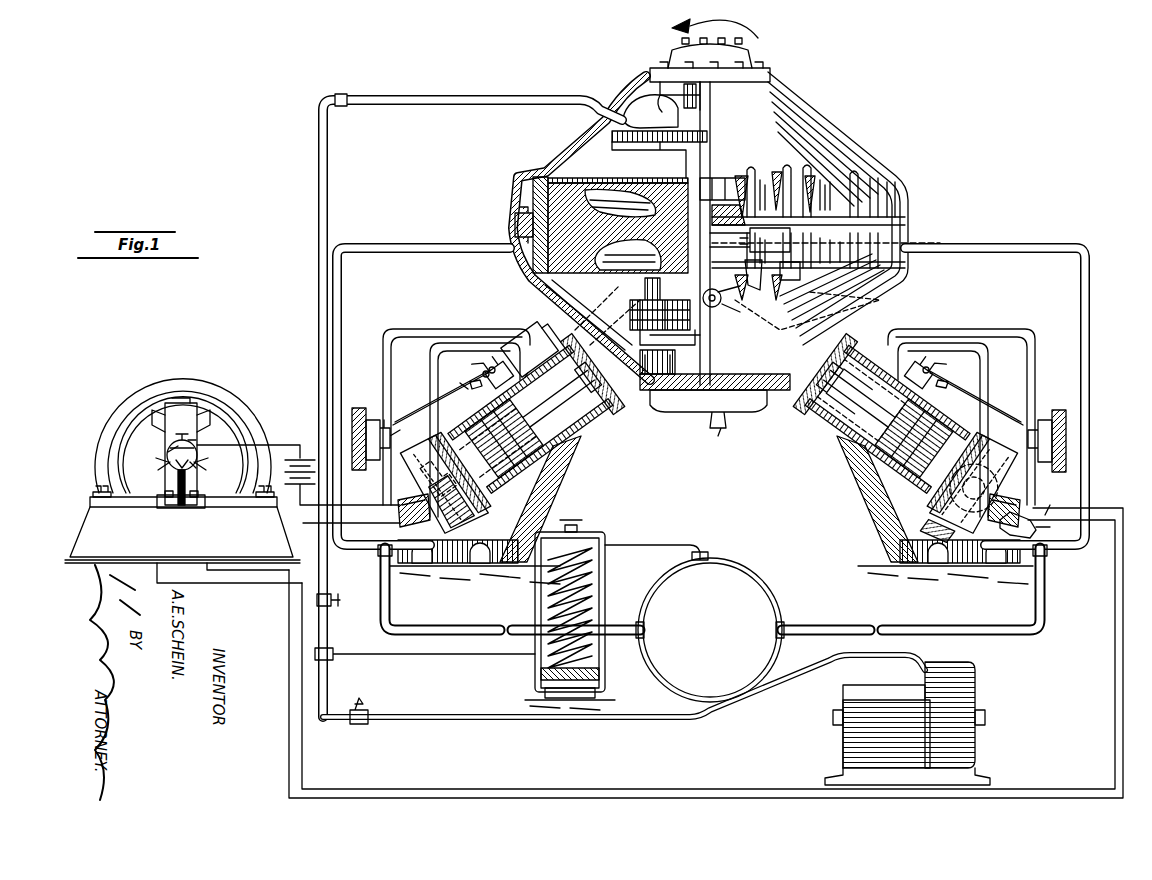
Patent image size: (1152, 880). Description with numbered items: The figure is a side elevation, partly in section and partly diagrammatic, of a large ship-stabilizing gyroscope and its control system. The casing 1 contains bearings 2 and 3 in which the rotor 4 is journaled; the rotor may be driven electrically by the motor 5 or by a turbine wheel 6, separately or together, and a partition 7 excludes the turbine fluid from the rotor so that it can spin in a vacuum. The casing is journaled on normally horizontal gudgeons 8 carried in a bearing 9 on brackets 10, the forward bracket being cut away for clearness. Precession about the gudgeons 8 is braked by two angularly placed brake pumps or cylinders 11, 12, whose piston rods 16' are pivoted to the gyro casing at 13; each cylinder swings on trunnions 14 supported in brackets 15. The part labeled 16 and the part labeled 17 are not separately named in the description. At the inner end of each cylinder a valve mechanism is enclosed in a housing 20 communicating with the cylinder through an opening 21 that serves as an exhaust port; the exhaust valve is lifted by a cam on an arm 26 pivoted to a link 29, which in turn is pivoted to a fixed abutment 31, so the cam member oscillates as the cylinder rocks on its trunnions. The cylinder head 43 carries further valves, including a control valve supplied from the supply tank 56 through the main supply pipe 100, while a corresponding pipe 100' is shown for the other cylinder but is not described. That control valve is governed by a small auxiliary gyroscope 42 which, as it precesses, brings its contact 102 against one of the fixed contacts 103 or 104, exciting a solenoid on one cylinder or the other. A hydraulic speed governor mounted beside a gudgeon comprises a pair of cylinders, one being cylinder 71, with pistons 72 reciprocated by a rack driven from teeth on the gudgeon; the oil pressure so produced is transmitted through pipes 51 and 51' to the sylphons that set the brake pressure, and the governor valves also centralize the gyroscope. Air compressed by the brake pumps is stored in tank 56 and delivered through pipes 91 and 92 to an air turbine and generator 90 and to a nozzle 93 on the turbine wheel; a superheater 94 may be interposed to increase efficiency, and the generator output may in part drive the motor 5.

The casing 1 is at (790, 96).
The bearing 2 is at (700, 92).
The bearing 3 is at (690, 368).
The rotor 4 is at (538, 205).
The motor 5 is at (690, 282).
The turbine wheel 6 is at (650, 142).
The partition 7 is at (625, 182).
The gudgeons 8 is at (718, 180).
The bearing 9 is at (740, 182).
The brackets 10 is at (878, 494).
The brake pump or cylinder 11 is at (915, 414).
The brake pump or cylinder 12 is at (580, 438).
The pivot on gyro casing 13 is at (722, 300).
The trunnions 14 is at (955, 470).
The brackets 15 is at (952, 525).
The piston 16 is at (721, 431).
The piston rods 16' is at (862, 400).
The piston rod 17 is at (548, 410).
The housing 20 is at (548, 343).
The opening 21 is at (534, 417).
The arm 26 is at (505, 372).
The link 29 is at (470, 382).
The fixed abutment 31 is at (384, 428).
The auxiliary gyroscope 42 is at (232, 481).
The cylinder head 43 is at (444, 484).
The pipe 51 is at (1010, 396).
The pipe 51' is at (423, 396).
The supply tank 56 is at (710, 630).
The cylinder 71 is at (752, 229).
The pistons 72 is at (772, 282).
The air turbine and generator 90 is at (907, 723).
The pipe 91 is at (700, 720).
The pipe 92 is at (330, 208).
The nozzle 93 is at (650, 111).
The superheater 94 is at (602, 574).
The main supply pipe 100 is at (509, 587).
The right exhaust pipe 100' is at (914, 587).
The contact 102 is at (196, 441).
The fixed contact 103 is at (168, 452).
The fixed contact 104 is at (196, 468).